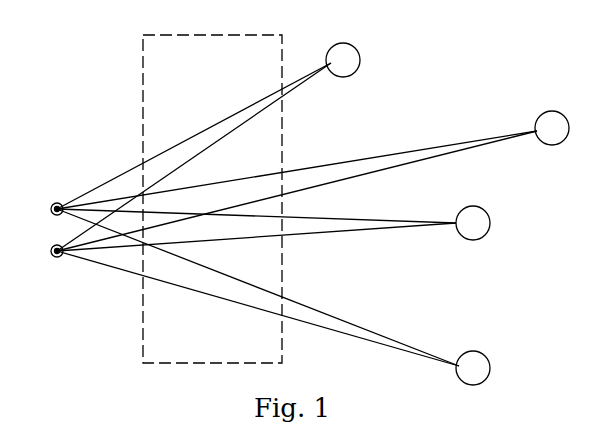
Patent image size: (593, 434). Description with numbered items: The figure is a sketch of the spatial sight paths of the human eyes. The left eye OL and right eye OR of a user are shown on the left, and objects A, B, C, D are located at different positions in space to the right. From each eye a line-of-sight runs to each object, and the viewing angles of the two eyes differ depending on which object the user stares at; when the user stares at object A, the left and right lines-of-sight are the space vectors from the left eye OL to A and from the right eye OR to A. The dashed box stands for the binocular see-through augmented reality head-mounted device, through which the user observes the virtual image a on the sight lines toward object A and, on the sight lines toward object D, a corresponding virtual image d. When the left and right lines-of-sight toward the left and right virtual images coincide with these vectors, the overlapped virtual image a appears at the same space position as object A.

The left eye OL is at (40, 209).
The right eye OR is at (40, 251).
The object A is at (343, 60).
The object B is at (552, 128).
The object C is at (473, 223).
The object D is at (473, 368).
The virtual image a is at (194, 157).
The light rays to point D d is at (258, 287).